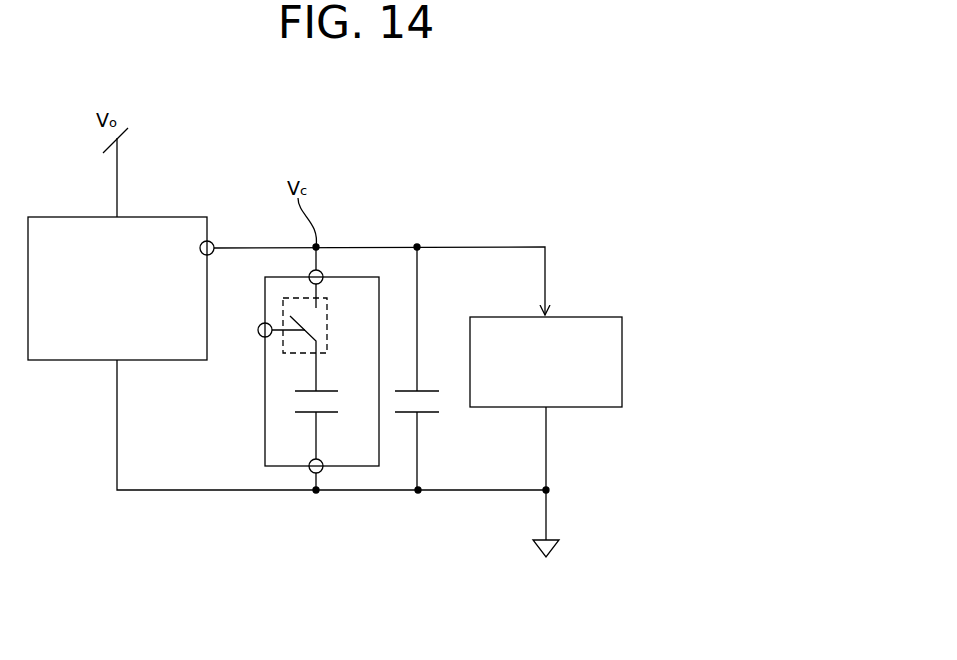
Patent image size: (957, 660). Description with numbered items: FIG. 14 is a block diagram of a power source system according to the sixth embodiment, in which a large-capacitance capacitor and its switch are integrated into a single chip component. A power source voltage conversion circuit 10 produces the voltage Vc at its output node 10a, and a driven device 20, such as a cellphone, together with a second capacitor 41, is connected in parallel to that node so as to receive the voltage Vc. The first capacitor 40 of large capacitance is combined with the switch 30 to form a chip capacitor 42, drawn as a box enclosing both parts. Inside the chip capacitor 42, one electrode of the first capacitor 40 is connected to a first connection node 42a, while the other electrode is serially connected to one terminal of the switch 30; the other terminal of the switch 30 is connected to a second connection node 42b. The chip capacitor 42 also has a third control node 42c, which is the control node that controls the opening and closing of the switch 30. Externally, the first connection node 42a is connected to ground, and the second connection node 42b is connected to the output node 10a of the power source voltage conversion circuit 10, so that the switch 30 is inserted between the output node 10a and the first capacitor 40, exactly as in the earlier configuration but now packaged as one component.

The power source voltage conversion circuit 10 is at (149, 214).
The output node 10a is at (213, 243).
The driven device 20 is at (590, 317).
The switch 30 is at (328, 337).
The first capacitor 40 is at (323, 412).
The second capacitor 41 is at (427, 412).
The chip capacitor 42 is at (263, 435).
The first connection node 42a is at (311, 473).
The second connection node 42b is at (322, 272).
The third control node 42c is at (260, 336).